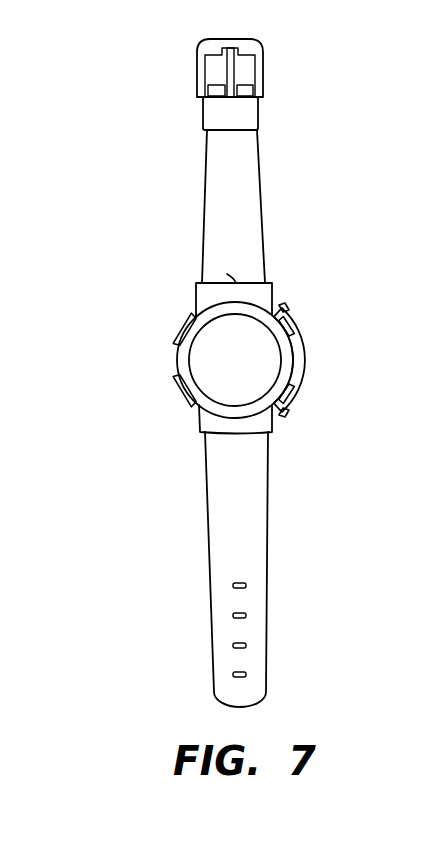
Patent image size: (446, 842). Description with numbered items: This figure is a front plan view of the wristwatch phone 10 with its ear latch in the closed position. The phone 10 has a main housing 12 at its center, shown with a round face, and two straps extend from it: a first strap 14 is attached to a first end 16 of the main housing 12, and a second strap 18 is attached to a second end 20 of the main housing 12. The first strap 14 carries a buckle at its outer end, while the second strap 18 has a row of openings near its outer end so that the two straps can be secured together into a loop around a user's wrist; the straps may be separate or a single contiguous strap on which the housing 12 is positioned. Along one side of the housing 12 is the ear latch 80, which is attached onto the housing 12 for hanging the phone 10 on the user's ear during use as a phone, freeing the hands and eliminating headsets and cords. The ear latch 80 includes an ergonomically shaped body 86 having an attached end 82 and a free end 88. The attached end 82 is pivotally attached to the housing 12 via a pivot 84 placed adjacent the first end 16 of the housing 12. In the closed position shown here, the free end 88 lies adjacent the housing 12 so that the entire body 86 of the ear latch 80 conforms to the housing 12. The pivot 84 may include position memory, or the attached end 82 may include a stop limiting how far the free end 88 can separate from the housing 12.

The wristwatch phone 10 is at (162, 311).
The main housing 12 is at (185, 366).
The first strap 14 is at (212, 201).
The first end 16 is at (227, 274).
The second strap 18 is at (222, 598).
The second end 20 is at (236, 433).
The ear latch 80 is at (300, 340).
The attached end 82 is at (286, 306).
The pivot 84 is at (276, 311).
The body 86 is at (300, 367).
The free end 88 is at (286, 410).